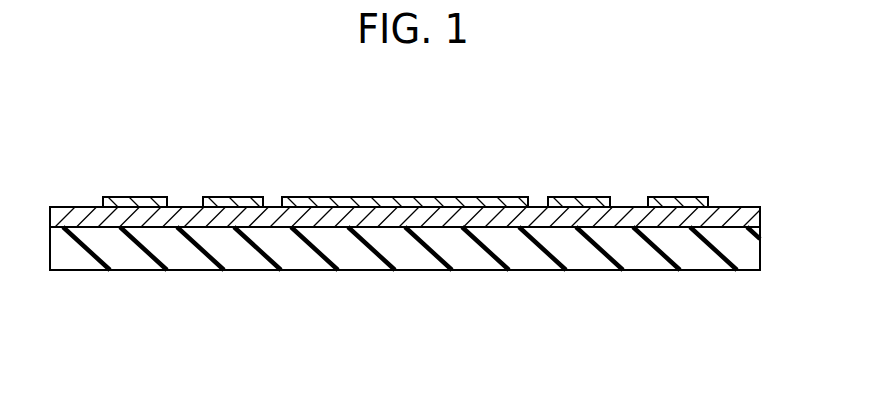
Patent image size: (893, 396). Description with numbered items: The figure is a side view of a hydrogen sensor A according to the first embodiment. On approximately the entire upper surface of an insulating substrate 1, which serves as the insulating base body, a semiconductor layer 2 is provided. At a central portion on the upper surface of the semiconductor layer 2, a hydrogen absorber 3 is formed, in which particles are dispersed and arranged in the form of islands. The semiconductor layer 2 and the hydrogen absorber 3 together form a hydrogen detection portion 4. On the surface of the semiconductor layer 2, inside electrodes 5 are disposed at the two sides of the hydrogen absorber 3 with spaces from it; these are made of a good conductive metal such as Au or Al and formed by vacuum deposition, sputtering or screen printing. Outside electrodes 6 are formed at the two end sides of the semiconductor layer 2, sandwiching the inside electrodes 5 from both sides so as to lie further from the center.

The insulating substrate 1 is at (762, 250).
The semiconductor layer 2 is at (762, 210).
The hydrogen absorber 3 is at (470, 199).
The hydrogen detection portion 4 is at (460, 131).
The inside electrodes 5 is at (235, 199).
The outside electrodes 6 is at (137, 199).
The hydrogen sensor A is at (365, 170).